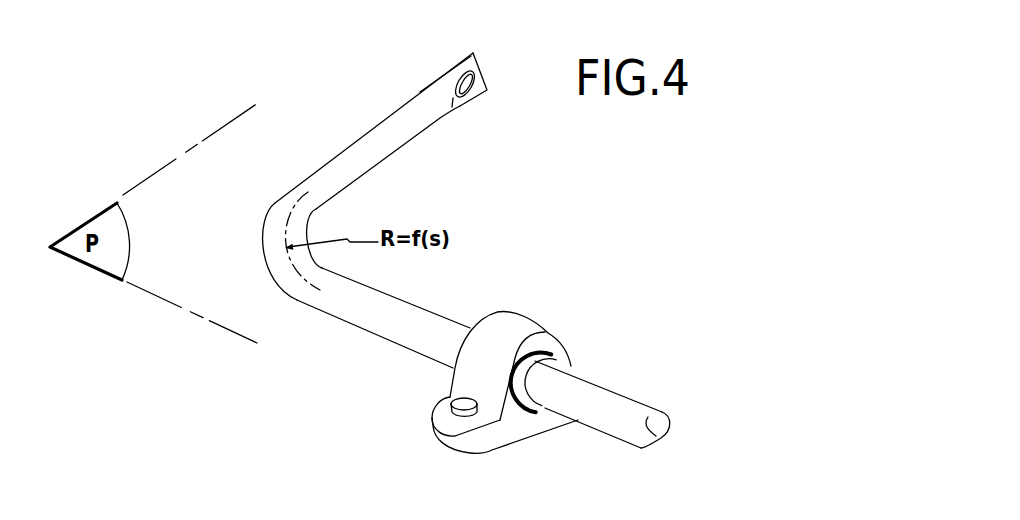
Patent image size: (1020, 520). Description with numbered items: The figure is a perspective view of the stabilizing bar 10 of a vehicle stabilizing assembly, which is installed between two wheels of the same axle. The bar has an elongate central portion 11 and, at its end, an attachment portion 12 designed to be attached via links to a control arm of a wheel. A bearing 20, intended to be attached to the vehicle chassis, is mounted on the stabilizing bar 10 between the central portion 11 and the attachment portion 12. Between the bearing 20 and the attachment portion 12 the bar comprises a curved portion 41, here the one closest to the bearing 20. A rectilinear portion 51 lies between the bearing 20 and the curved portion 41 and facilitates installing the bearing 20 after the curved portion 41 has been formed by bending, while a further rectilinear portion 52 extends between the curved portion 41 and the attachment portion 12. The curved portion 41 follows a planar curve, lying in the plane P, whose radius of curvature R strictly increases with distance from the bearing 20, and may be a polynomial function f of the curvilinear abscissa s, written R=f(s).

The stabilizing bar 10 is at (637, 247).
The central portion 11 is at (632, 405).
The attachment portion 12 is at (460, 62).
The bearing 20 is at (525, 333).
The curved portion 41 is at (271, 211).
The rectilinear portion 51 is at (425, 316).
The rectilinear portion 52 is at (398, 137).